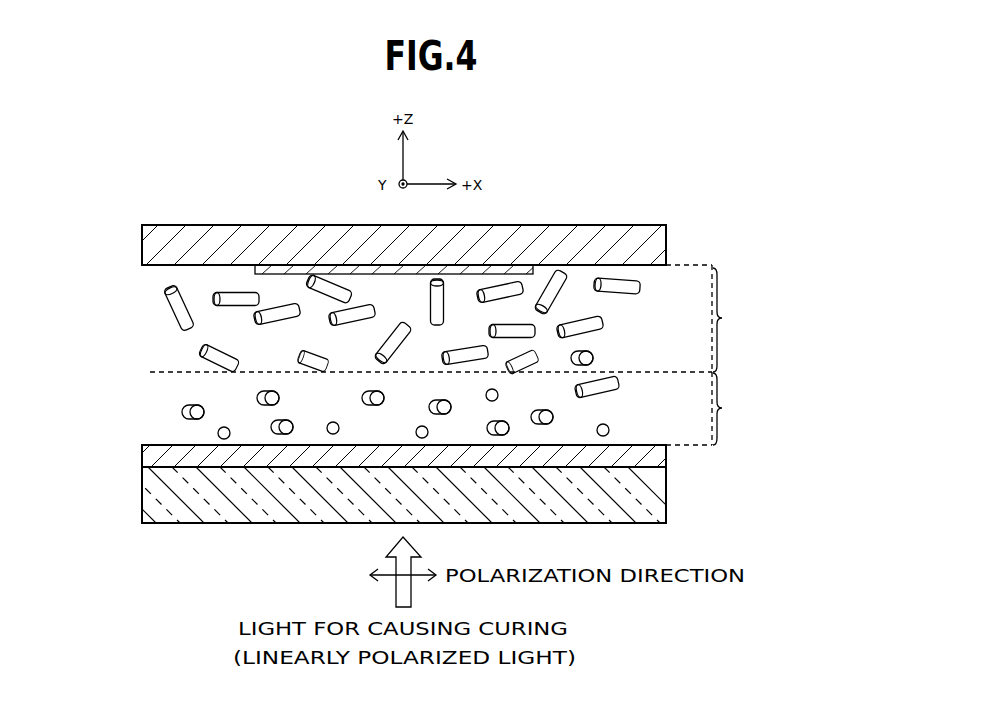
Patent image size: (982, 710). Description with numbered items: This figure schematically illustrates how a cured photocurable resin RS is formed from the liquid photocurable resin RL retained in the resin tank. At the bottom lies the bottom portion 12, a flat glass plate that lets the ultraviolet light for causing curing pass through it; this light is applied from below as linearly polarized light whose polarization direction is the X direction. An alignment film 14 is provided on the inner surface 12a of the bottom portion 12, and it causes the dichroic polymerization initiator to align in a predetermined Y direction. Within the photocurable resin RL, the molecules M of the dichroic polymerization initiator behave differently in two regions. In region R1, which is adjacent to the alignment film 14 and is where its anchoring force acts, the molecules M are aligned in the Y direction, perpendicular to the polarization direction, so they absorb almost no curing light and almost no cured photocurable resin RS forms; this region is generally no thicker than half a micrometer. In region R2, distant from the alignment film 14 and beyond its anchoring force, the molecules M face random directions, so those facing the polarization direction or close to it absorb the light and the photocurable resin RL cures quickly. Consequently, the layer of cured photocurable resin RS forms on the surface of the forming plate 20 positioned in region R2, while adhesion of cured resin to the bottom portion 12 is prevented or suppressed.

The forming plate 20 is at (668, 246).
The cured photocurable resin RS is at (256, 269).
The photocurable resin RL is at (128, 336).
The region R2 is at (449, 318).
The region R1 is at (707, 408).
The molecules of the dichroic polymerization initiator M is at (182, 410).
The alignment film 14 is at (668, 462).
The bottom portion 12 is at (668, 494).
The inner surface 12a is at (184, 462).